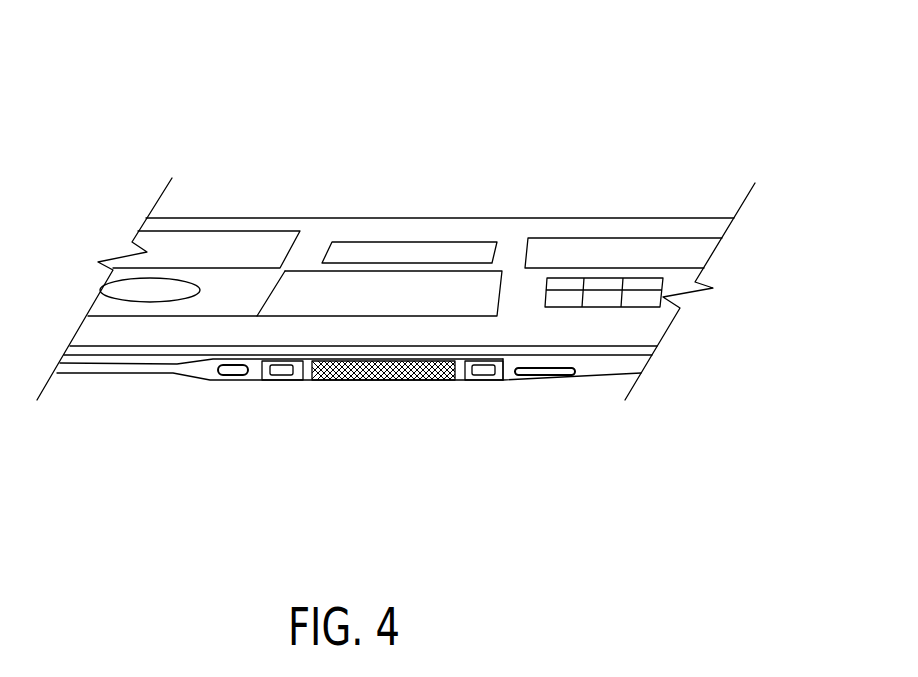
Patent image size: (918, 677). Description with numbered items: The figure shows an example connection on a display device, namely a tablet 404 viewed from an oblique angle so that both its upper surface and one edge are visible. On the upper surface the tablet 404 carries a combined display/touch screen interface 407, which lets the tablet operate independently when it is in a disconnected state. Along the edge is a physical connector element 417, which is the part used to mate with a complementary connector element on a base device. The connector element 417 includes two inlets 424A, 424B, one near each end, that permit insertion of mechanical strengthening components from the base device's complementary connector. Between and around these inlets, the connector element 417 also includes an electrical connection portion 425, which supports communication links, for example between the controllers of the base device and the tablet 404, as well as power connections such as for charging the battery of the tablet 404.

The display device (tablet) 404 is at (396, 264).
The combined display/touch screen interface 407 is at (372, 245).
The connector element 417 is at (340, 387).
The inlet 424A is at (273, 382).
The inlet 424B is at (488, 382).
The electrical connection portion 425 is at (395, 382).